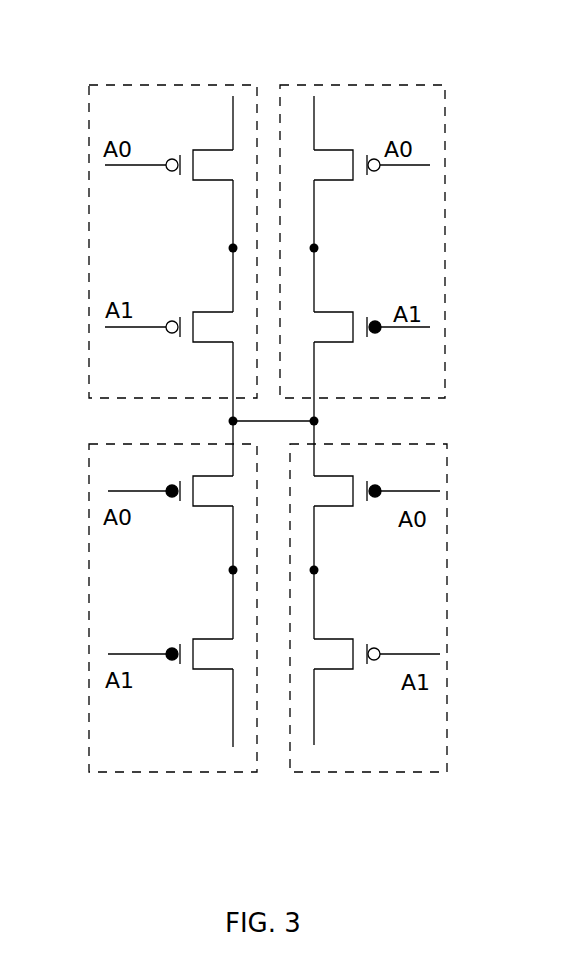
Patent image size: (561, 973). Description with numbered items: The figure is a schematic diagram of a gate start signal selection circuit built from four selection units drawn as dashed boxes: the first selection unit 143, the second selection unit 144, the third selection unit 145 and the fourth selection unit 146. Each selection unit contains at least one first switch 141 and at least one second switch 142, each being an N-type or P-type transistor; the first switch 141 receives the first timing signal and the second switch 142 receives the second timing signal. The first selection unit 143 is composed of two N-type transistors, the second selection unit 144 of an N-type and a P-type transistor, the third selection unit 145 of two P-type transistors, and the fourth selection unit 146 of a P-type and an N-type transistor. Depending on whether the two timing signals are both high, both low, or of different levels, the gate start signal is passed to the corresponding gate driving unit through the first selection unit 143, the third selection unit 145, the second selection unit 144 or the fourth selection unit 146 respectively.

The first switch 141 is at (272, 409).
The second switch 142 is at (274, 569).
The first selection unit 143 is at (127, 85).
The second selection unit 144 is at (392, 85).
The third selection unit 145 is at (176, 774).
The fourth selection unit 146 is at (378, 774).